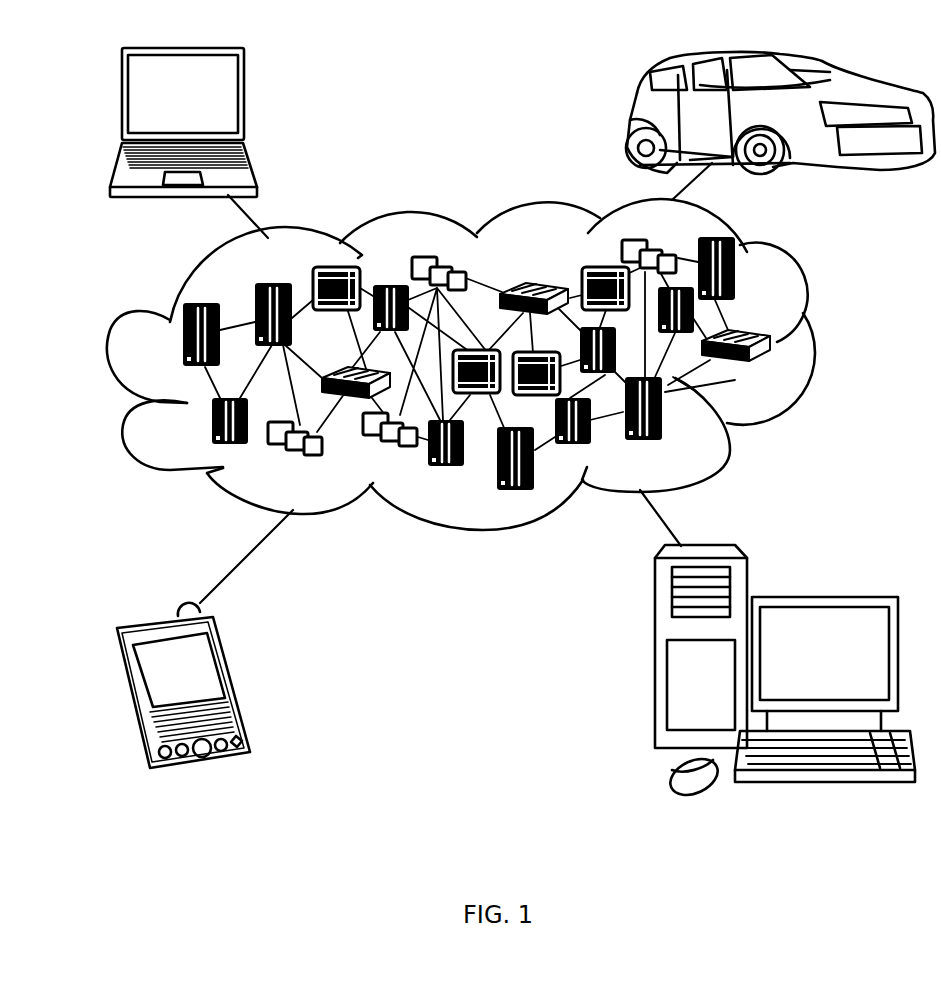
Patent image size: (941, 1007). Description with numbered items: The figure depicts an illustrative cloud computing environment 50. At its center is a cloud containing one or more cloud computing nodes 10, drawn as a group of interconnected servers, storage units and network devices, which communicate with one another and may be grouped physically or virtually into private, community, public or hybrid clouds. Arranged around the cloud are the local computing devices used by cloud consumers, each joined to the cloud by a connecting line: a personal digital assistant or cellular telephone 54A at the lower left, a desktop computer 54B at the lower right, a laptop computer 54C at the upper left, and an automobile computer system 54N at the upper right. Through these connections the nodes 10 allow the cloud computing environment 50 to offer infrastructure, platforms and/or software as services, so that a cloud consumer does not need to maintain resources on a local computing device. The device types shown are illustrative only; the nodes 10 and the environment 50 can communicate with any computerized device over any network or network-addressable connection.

The cloud computing nodes 10 is at (778, 373).
The cloud computing environment 50 is at (823, 345).
The personal digital assistant or cellular telephone 54A is at (238, 683).
The desktop computer 54B is at (822, 598).
The laptop computer 54C is at (244, 103).
The automobile computer system 54N is at (630, 118).